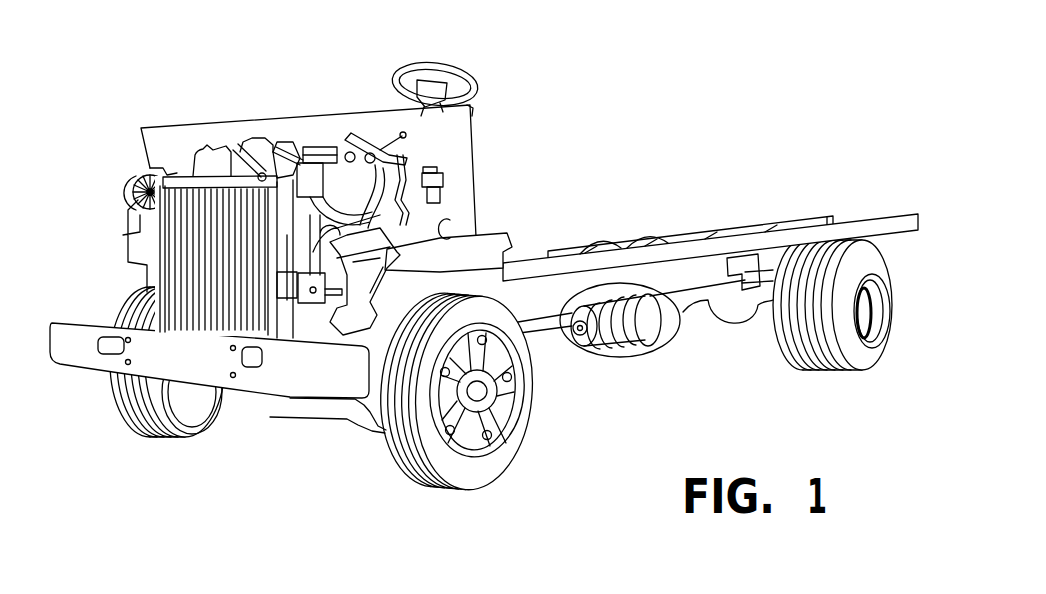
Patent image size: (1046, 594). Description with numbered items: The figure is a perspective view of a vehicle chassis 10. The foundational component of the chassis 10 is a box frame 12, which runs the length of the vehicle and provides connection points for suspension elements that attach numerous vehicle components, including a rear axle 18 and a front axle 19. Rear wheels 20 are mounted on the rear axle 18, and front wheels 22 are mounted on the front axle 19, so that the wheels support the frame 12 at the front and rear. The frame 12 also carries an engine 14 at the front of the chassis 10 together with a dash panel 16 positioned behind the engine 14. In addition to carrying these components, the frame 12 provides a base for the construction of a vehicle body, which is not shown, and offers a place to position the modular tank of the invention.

The vehicle chassis 10 is at (705, 111).
The box frame 12 is at (673, 233).
The engine 14 is at (217, 157).
The dash panel 16 is at (472, 175).
The rear axle 18 is at (745, 328).
The front axle 19 is at (330, 423).
The rear wheels 20 is at (658, 352).
The front wheels 22 is at (190, 392).